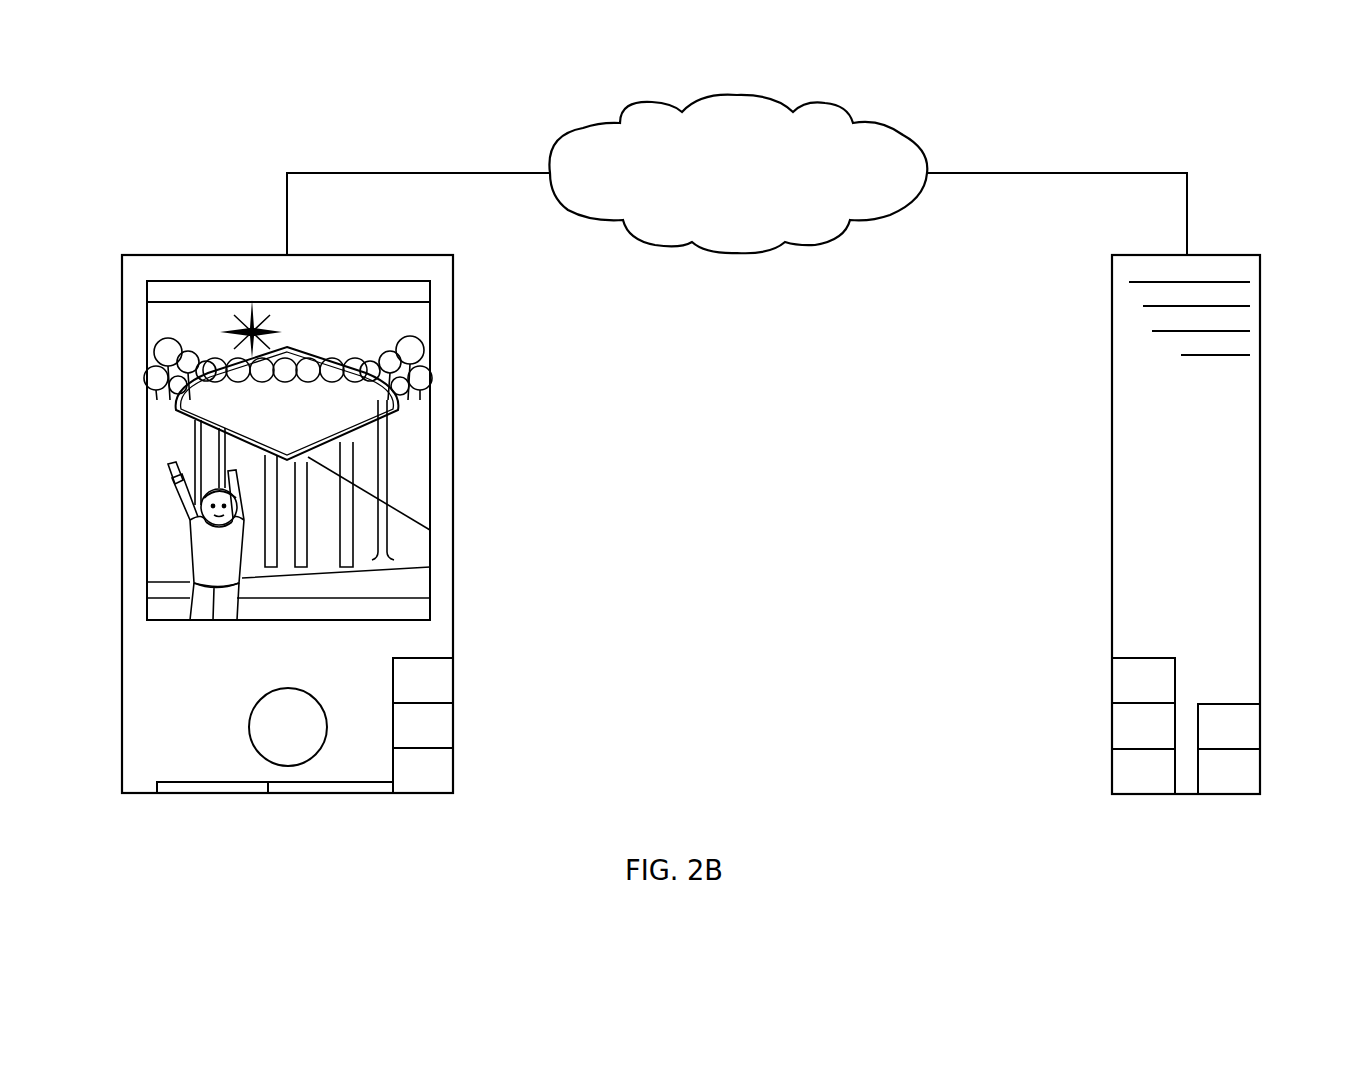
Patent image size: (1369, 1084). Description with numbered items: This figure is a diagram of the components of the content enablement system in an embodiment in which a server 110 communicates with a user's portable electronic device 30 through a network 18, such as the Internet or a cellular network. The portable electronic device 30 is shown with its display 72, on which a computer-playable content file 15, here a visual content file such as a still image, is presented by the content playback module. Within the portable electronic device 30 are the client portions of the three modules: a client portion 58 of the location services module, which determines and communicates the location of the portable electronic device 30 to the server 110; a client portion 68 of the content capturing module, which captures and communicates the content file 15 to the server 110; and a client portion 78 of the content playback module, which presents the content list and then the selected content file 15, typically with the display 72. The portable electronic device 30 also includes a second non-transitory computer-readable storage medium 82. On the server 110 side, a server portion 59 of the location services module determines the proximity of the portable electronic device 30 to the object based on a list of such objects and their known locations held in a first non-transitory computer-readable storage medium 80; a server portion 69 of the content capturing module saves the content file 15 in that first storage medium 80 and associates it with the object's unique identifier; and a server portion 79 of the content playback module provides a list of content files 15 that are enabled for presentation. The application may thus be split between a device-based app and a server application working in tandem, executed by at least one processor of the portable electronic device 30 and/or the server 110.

The network 18 is at (738, 158).
The portable electronic device 30 is at (122, 318).
The computer-playable content file 15 is at (208, 320).
The display 72 is at (417, 431).
The client portion of location services module 58 is at (448, 682).
The client portion of content capturing module 68 is at (448, 720).
The client portion of content playback module 78 is at (448, 777).
The second non-transitory computer-readable storage medium 82 is at (232, 790).
The server 110 is at (1260, 319).
The server portion of location services module 59 is at (1120, 680).
The server portion of content capturing module 69 is at (1120, 722).
The server portion of content playback module 79 is at (1120, 779).
The first non-transitory computer-readable storage medium 80 is at (1237, 780).